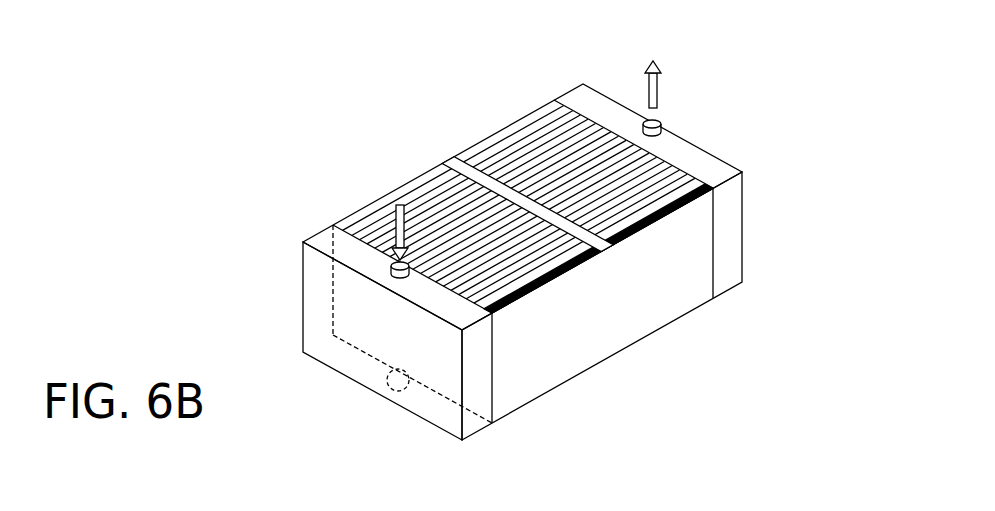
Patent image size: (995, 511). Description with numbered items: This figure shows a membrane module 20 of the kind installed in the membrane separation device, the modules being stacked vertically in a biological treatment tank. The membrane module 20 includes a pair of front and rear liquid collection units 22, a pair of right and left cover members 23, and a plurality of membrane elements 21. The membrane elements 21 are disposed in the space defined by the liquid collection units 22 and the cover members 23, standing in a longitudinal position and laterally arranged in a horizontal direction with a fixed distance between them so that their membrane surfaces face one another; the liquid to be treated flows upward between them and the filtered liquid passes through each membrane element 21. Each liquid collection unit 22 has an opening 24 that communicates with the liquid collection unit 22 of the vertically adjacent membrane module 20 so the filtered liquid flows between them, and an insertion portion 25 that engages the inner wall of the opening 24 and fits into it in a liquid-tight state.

The membrane module 20 is at (210, 194).
The membrane element 21 is at (527, 122).
The liquid collection unit 22 is at (312, 305).
The cover member 23 is at (430, 172).
The opening 24 is at (398, 392).
The insertion portion 25 is at (395, 235).